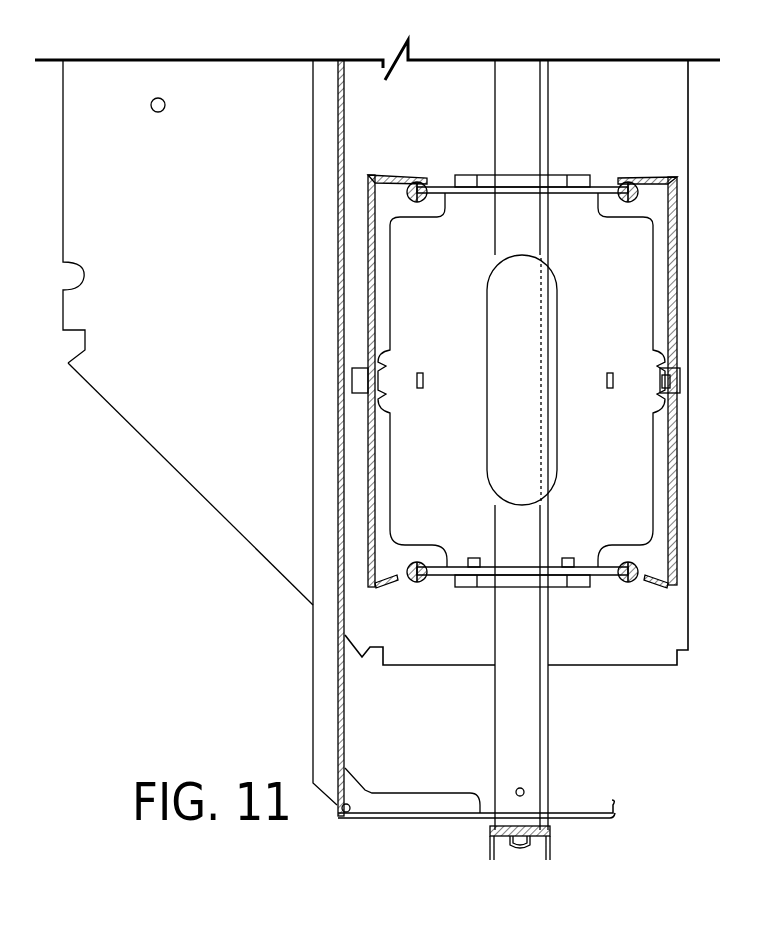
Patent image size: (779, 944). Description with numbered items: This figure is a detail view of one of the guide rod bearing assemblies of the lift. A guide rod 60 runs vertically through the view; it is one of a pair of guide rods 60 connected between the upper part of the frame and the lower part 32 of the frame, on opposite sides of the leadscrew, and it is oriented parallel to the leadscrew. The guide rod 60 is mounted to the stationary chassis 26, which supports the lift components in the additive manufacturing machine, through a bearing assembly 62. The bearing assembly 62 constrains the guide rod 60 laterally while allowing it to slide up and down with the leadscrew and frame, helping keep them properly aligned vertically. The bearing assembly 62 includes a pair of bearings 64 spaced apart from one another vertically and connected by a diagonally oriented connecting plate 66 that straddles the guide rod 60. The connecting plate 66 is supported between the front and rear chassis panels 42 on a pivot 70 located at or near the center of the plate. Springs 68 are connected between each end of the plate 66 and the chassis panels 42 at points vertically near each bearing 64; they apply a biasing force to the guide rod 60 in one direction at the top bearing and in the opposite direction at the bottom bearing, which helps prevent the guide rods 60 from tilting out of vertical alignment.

The chassis 26 is at (207, 490).
The lower part of frame 32 is at (583, 812).
The chassis panel 42 is at (383, 587).
The guide rod 60 is at (531, 718).
The bearing assembly 62 is at (598, 145).
The bearing 64 is at (488, 180).
The connecting plate 66 is at (640, 307).
The spring 68 is at (419, 182).
The pivot 70 is at (352, 377).